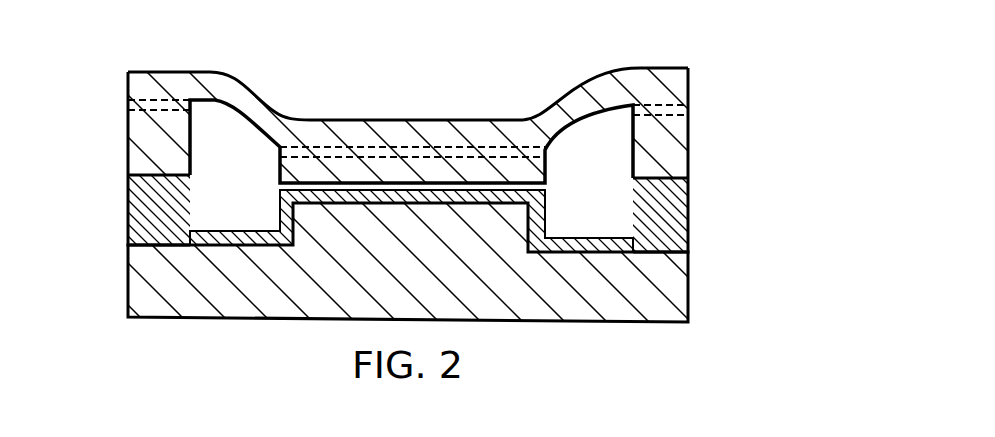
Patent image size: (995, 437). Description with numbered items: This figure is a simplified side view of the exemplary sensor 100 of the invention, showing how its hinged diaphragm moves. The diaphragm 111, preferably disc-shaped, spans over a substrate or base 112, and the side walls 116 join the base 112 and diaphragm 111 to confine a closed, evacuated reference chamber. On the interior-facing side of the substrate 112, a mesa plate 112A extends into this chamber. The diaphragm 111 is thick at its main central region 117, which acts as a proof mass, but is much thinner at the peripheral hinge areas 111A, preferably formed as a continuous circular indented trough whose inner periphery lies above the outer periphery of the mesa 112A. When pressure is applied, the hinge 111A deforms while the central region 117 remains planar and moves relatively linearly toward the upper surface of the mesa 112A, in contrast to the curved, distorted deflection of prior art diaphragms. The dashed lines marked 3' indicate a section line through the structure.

The sensor 100 is at (106, 155).
The diaphragm 111 is at (688, 100).
The hinge 111A is at (553, 107).
The central region 117 is at (296, 120).
The side wall 116 is at (688, 207).
The substrate 112 is at (688, 293).
The mesa plate 112A is at (513, 219).
The section line 3' is at (408, 128).